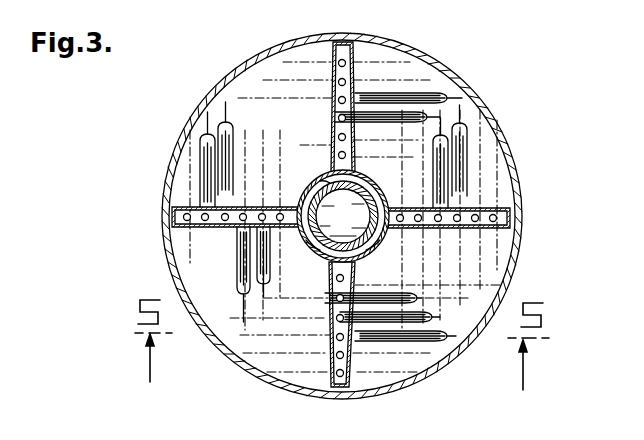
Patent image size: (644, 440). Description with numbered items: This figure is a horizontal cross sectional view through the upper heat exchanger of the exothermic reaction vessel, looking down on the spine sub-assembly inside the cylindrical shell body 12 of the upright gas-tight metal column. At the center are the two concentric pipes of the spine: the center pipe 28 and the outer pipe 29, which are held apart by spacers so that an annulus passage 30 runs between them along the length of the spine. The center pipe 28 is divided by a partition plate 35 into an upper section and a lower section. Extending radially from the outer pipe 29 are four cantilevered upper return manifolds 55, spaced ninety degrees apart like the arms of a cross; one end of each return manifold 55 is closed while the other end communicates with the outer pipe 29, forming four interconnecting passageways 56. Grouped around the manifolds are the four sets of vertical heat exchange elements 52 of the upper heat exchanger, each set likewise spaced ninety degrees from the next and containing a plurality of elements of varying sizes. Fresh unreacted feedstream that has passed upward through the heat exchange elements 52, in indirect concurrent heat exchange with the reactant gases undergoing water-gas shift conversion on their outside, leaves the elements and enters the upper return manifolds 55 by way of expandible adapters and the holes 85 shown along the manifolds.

The cylindrical shell body 12 is at (416, 42).
The upper return manifolds 55 is at (353, 42).
The heat exchange elements 52 is at (226, 108).
The holes 85 is at (333, 101).
The outer pipe 29 is at (380, 184).
The interconnecting passageways 56 is at (324, 184).
The partition plate 35 is at (343, 216).
The center pipe 28 is at (318, 246).
The annulus passage 30 is at (368, 246).